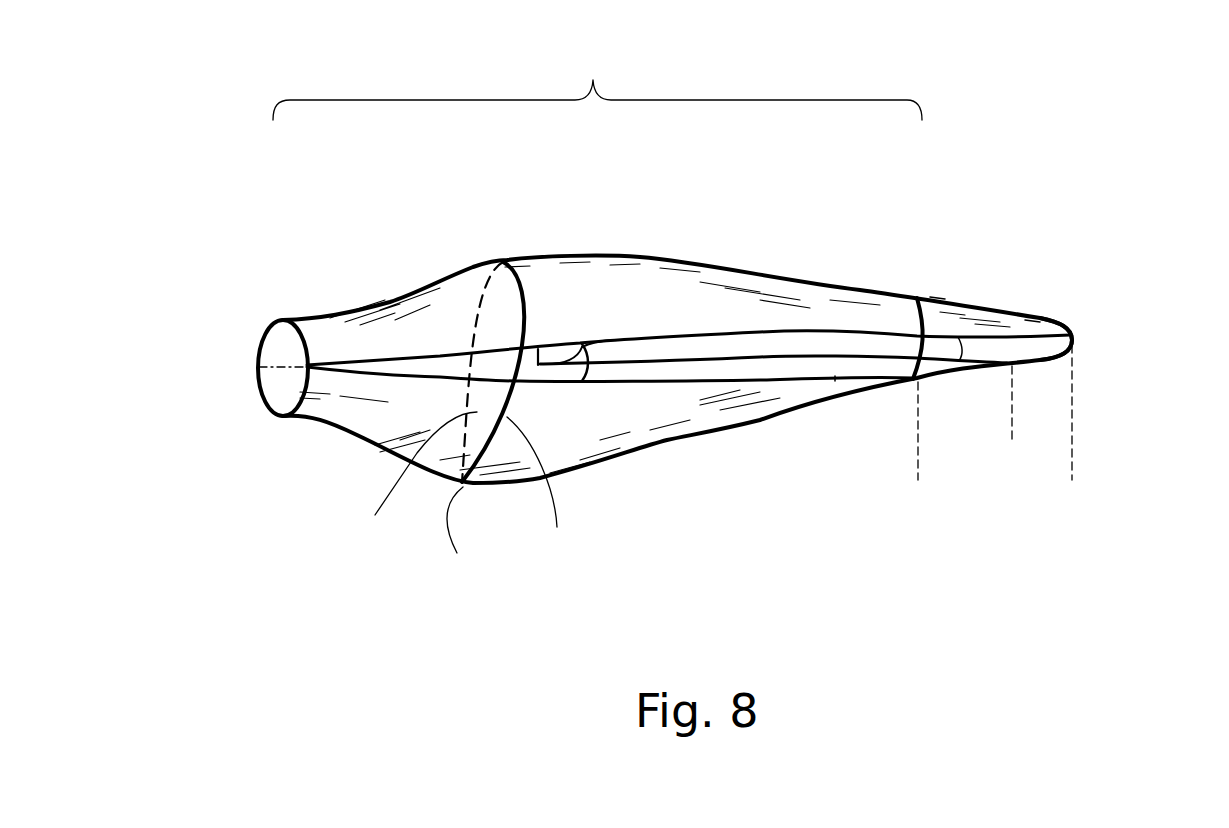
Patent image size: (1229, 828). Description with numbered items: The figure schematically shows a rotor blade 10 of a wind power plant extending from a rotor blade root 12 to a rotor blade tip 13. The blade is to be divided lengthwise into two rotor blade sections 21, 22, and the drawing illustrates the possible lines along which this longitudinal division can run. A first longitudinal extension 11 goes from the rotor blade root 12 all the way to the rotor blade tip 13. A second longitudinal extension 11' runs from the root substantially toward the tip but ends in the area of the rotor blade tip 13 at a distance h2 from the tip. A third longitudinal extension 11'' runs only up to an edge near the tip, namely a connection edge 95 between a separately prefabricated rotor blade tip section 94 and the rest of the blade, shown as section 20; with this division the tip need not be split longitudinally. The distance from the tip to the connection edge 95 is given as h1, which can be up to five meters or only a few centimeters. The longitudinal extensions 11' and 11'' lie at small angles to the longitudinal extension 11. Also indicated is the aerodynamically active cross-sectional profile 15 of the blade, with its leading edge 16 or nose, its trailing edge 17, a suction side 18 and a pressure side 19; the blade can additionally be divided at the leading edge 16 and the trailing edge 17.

The rotor blade 10 is at (757, 248).
The longitudinal extension 11 is at (907, 285).
The longitudinal extension 11' is at (1014, 296).
The longitudinal extension 11'' is at (812, 436).
The rotor blade root 12 is at (278, 400).
The rotor blade tip 13 is at (1073, 328).
The cross-sectional profile 15 is at (527, 299).
The leading edge 16 is at (495, 262).
The trailing edge 17 is at (460, 536).
The suction side 18 is at (542, 491).
The pressure side 19 is at (416, 480).
The section 20 is at (597, 84).
The rotor blade section 21 is at (685, 293).
The rotor blade section 22 is at (633, 423).
The rotor blade tip section 94 is at (1032, 323).
The connection edge 95 is at (937, 298).
The distance h1 is at (1072, 467).
The distance h2 is at (963, 423).